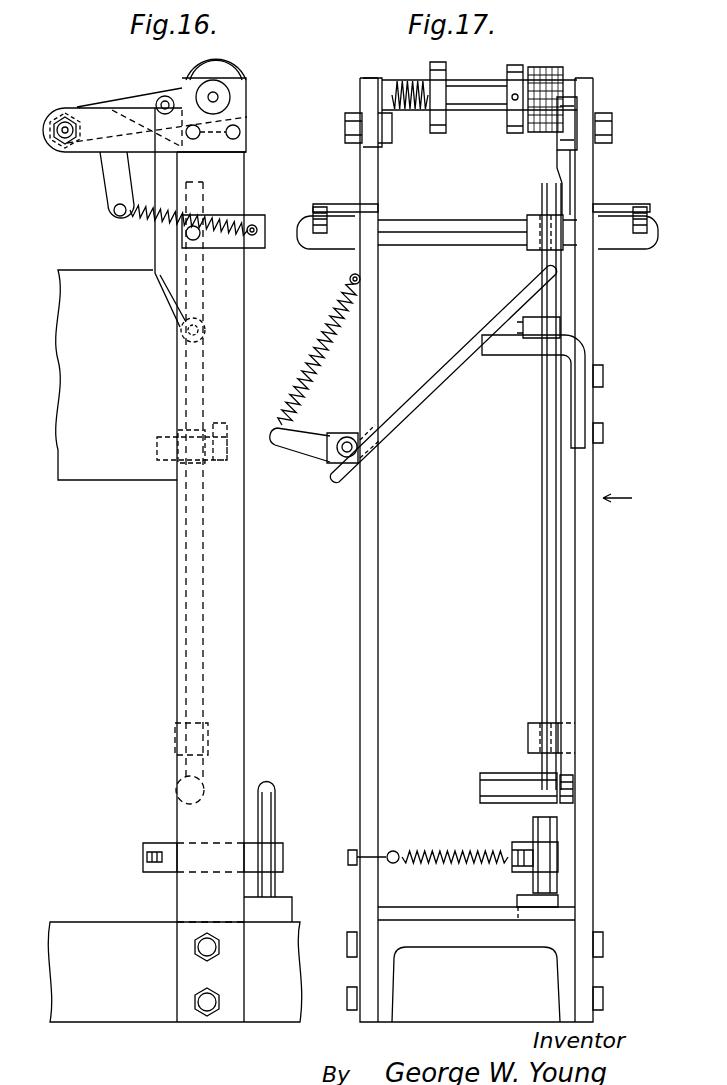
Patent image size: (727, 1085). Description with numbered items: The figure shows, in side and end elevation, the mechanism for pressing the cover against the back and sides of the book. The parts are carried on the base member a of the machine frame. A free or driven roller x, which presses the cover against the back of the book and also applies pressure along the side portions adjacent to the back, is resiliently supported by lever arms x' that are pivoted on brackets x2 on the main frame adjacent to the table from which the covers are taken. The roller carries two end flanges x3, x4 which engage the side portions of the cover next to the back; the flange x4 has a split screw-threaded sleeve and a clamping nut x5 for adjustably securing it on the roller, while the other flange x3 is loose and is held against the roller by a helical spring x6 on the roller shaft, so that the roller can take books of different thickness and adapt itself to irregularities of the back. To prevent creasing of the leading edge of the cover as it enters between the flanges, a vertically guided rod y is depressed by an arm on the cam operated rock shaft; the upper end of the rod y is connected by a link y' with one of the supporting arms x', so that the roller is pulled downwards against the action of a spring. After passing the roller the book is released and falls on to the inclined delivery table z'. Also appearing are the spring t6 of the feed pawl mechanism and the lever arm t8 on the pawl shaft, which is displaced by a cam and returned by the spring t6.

In FIG. 16, the pressing roller x is at (222, 93).
In FIG. 17, the pressing roller x is at (479, 113).
In FIG. 16, the lever arm x' is at (145, 106).
In FIG. 17, the lever arm x' is at (475, 106).
In FIG. 16, the bracket x2 is at (128, 142).
In FIG. 17, the bracket x2 is at (358, 139).
In FIG. 17, the end flange x3 is at (446, 74).
In FIG. 17, the end flange x4 is at (512, 68).
In FIG. 17, the clamping nut x5 is at (559, 83).
In FIG. 17, the helical spring x6 is at (418, 113).
In FIG. 16, the vertically guided rod y is at (186, 540).
In FIG. 17, the vertically guided rod y is at (477, 493).
In FIG. 16, the link y' is at (150, 225).
In FIG. 17, the link y' is at (594, 182).
In FIG. 16, the inclined delivery table z' is at (116, 375).
In FIG. 17, the inclined delivery table z' is at (413, 373).
In FIG. 16, the spring t6 is at (143, 855).
In FIG. 17, the spring t6 is at (425, 850).
In FIG. 16, the lever arm t8 is at (273, 852).
In FIG. 17, the lever arm t8 is at (553, 862).
In FIG. 16, the base member a is at (174, 972).
In FIG. 17, the base member a is at (477, 933).